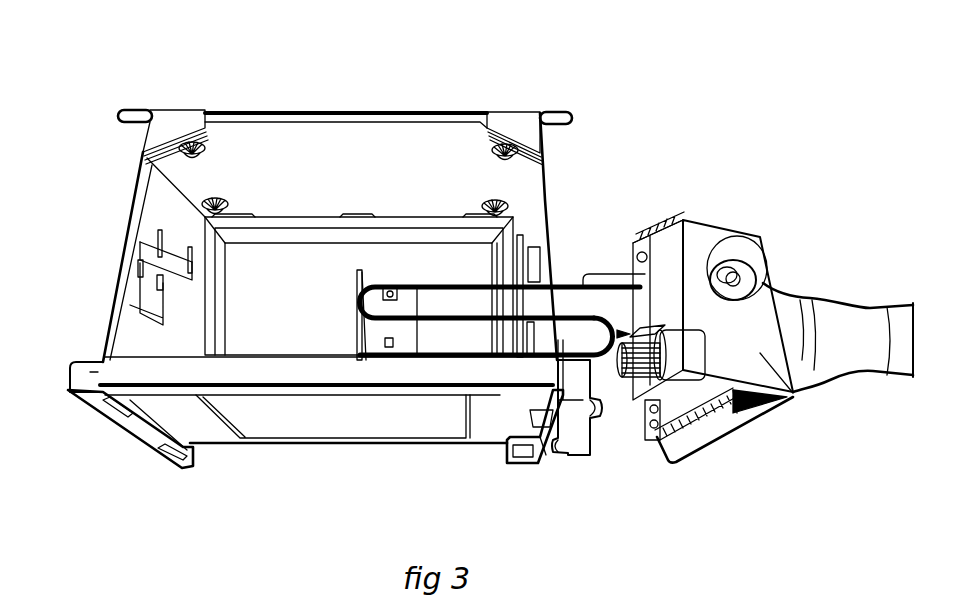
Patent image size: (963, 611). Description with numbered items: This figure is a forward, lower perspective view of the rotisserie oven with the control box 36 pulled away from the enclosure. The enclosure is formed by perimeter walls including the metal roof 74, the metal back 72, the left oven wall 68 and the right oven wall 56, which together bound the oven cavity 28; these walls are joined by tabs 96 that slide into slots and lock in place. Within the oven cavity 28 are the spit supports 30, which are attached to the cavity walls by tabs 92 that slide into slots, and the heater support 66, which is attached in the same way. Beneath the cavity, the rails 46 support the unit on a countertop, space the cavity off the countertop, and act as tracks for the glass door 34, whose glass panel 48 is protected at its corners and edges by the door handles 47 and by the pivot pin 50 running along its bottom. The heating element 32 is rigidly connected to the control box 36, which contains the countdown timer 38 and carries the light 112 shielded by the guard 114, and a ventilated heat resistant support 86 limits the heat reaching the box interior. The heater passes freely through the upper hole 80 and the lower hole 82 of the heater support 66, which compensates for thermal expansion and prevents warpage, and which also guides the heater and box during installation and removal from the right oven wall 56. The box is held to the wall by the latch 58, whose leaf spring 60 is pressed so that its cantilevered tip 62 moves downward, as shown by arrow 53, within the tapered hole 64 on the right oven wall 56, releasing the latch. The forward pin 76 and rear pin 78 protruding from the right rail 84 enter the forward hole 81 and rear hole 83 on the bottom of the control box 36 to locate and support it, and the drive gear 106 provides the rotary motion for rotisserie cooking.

The oven cavity 28 is at (168, 215).
The spit supports 30 is at (165, 250).
The heating element 32 is at (445, 288).
The glass door 34 is at (172, 266).
The control box 36 is at (793, 395).
The countdown timer 38 is at (753, 278).
The rails 46 is at (150, 440).
The door handles 47 is at (168, 123).
The glass panel 48 is at (133, 262).
The pivot pin 50 is at (327, 388).
The arrow 53 is at (640, 375).
The right oven wall 56 is at (500, 243).
The latch 58 is at (688, 228).
The leaf spring 60 is at (688, 335).
The cantilevered tip 62 is at (628, 327).
The tapered hole 64 is at (503, 357).
The heater support 66 is at (355, 340).
The left oven wall 68 is at (100, 393).
The metal back 72 is at (310, 257).
The metal roof 74 is at (292, 167).
The forward pin 76 is at (583, 408).
The rear pin 78 is at (558, 448).
The upper hole 80 is at (358, 275).
The forward hole 81 is at (728, 438).
The lower hole 82 is at (360, 320).
The rear hole 83 is at (678, 458).
The right rail 84 is at (542, 440).
The ventilated heat resistant support 86 is at (655, 221).
The tabs 92 is at (392, 288).
The tabs 96 is at (143, 151).
The drive gear 106 is at (618, 333).
The light 112 is at (680, 440).
The guard 114 is at (683, 347).